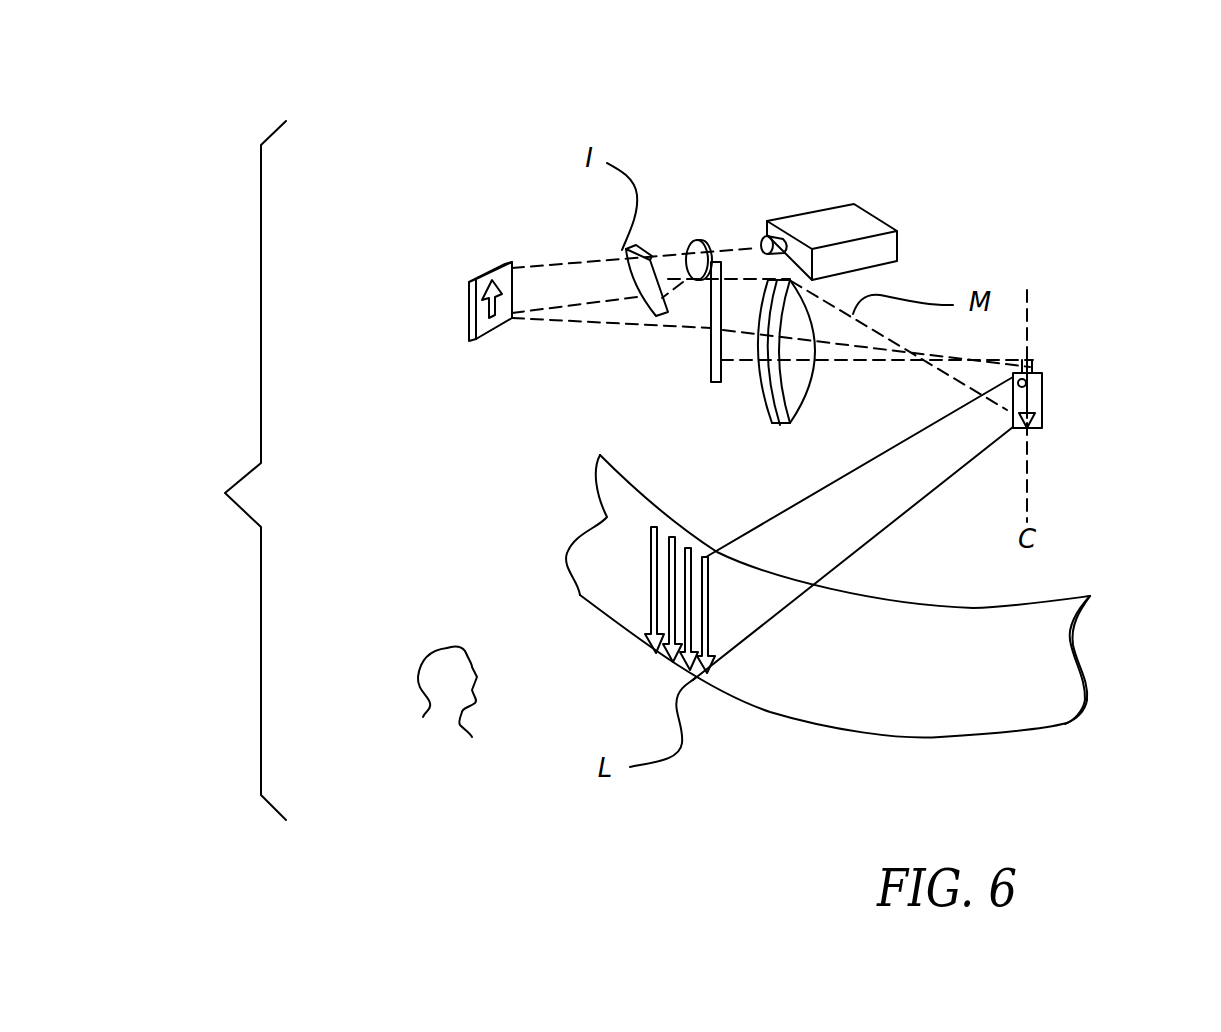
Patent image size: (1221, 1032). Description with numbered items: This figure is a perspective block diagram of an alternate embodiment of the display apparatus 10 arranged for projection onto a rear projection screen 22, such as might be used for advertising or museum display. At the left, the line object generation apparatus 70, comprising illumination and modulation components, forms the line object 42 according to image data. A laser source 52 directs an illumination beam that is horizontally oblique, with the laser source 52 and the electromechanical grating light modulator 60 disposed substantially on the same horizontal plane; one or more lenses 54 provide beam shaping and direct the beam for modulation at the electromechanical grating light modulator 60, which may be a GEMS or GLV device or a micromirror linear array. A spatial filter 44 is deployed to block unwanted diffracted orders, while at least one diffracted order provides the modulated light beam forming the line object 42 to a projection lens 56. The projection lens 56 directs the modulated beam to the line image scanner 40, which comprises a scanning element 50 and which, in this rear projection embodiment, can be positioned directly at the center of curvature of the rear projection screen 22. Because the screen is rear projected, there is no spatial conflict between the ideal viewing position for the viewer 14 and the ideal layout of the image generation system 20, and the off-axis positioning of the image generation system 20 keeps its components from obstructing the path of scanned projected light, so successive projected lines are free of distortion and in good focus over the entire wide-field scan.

The display apparatus 10 is at (460, 110).
The viewer 14 is at (446, 648).
The image generation system 20 is at (1082, 491).
The rear projection screen 22 is at (805, 714).
The line image scanner 40 is at (1042, 372).
The line object 42 is at (500, 272).
The spatial filter 44 is at (712, 372).
The scanning element 50 is at (1032, 358).
The laser source 52 is at (898, 249).
The lenses 54 is at (672, 205).
The projection lens 56 is at (768, 392).
The electromechanical grating light modulator 60 is at (490, 270).
The line object generation apparatus 70 is at (230, 470).